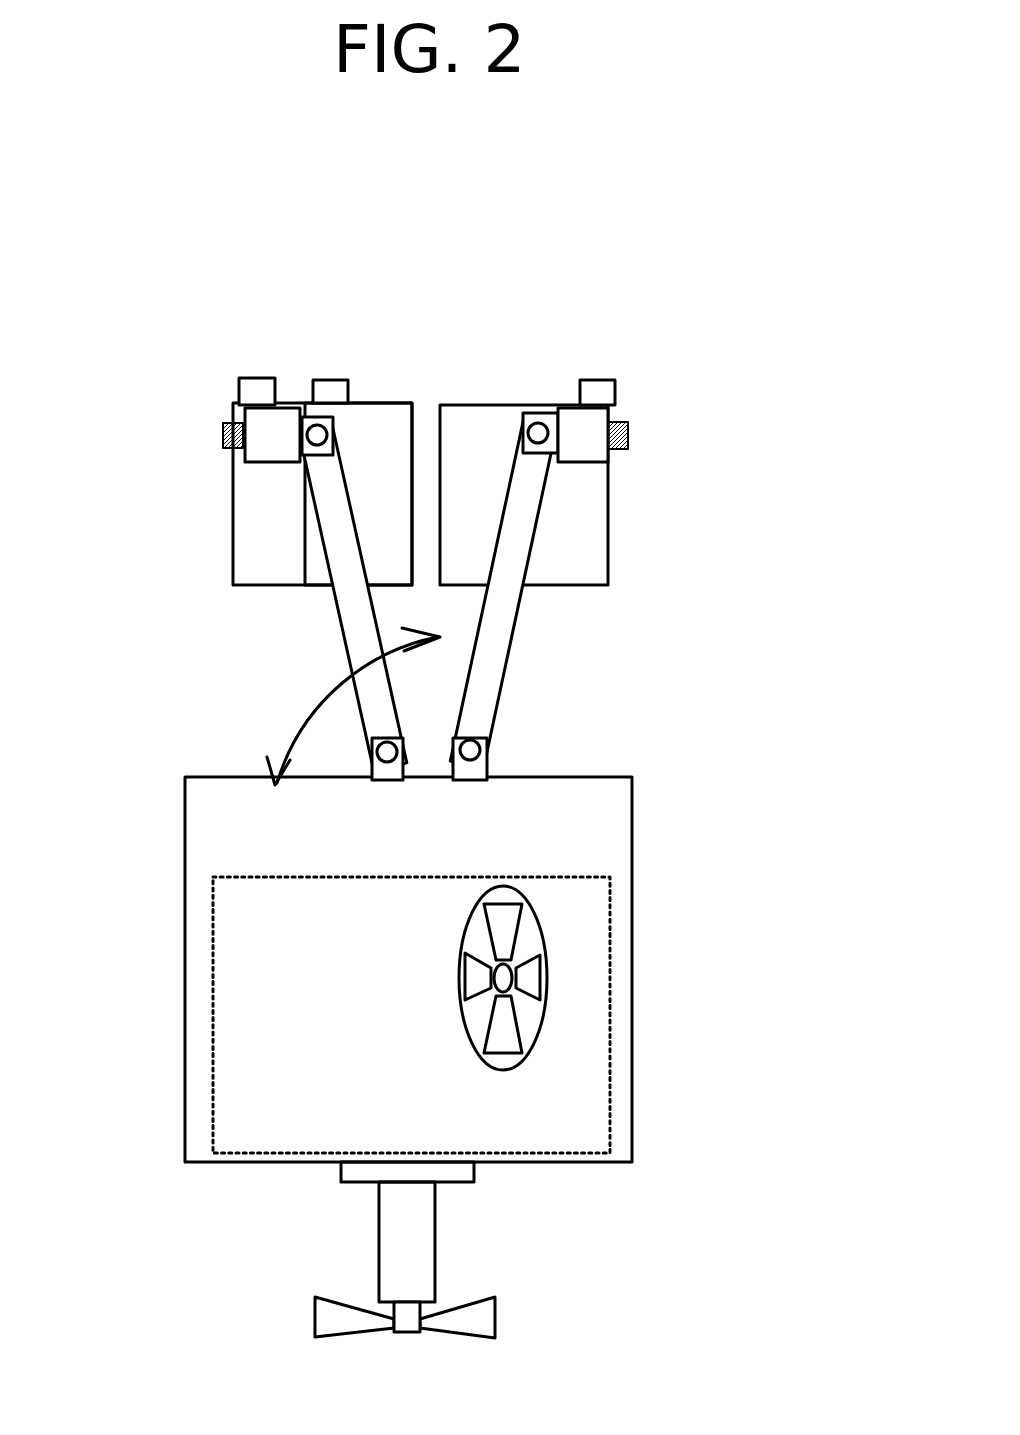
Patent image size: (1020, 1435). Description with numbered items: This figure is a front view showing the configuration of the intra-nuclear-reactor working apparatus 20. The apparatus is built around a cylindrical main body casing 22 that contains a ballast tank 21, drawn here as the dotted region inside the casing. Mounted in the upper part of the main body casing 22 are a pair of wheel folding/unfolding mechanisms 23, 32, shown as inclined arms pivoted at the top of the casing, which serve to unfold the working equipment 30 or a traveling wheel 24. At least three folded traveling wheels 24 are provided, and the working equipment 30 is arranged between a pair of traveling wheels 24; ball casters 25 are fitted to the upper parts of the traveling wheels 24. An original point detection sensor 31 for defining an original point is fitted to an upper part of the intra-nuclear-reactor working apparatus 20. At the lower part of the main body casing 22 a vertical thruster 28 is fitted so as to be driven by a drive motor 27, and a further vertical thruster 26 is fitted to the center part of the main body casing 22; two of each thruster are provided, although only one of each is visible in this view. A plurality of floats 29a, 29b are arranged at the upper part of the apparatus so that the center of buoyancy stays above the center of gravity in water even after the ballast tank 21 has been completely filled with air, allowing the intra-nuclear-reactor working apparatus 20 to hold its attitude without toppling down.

The intra-nuclear-reactor working apparatus 20 is at (747, 355).
The ballast tank 21 is at (240, 1040).
The main body casing 22 is at (208, 842).
The wheel folding/unfolding mechanism 23 is at (490, 692).
The traveling wheel 24 is at (223, 430).
The ball caster 25 is at (257, 373).
The vertical thruster 26 is at (525, 978).
The drive motor 27 is at (420, 1248).
The vertical thruster 28 is at (485, 1322).
The float 29a is at (495, 417).
The float 29b is at (385, 417).
The working equipment 30 is at (252, 513).
The original point detection sensor 31 is at (327, 382).
The wheel folding/unfolding mechanism 32 is at (340, 600).